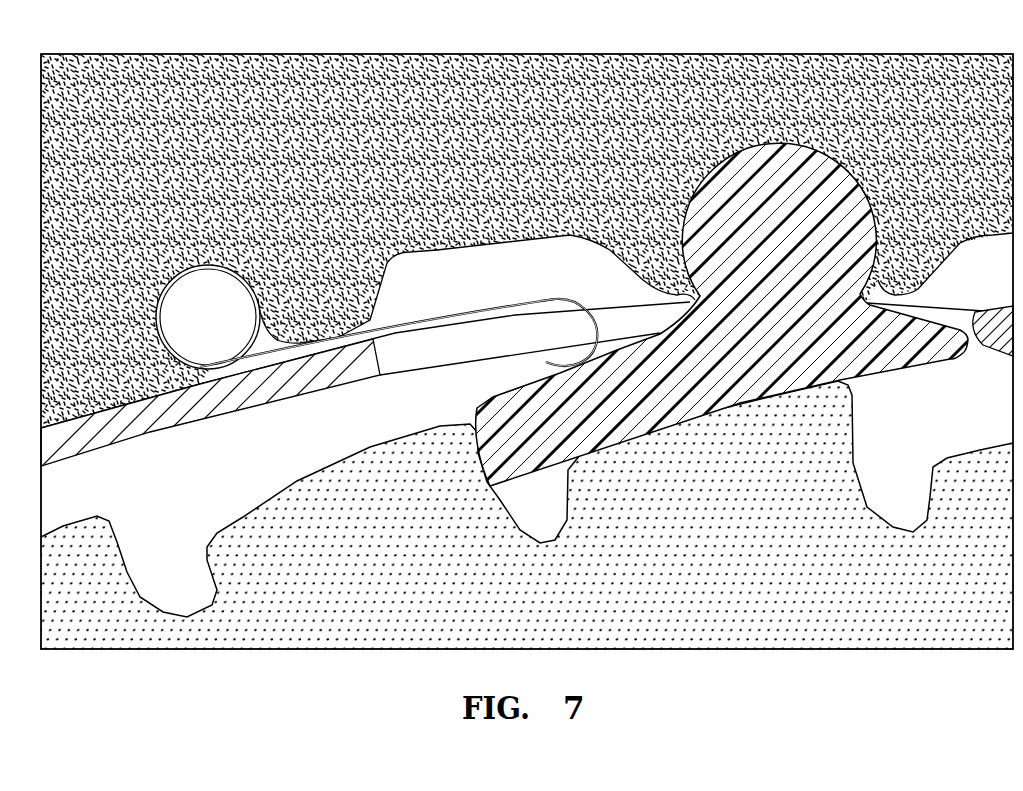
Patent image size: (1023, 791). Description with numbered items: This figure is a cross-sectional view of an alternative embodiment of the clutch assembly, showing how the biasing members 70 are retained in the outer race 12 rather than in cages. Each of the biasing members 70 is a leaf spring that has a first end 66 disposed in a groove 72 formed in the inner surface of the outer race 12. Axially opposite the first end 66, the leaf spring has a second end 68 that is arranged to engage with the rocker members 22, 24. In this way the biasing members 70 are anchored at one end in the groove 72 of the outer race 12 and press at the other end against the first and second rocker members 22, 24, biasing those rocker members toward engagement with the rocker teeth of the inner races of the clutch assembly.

The outer race 12 is at (238, 80).
The first plurality of rocker members 22 is at (678, 305).
The second plurality of rocker members 24 is at (727, 180).
The first end 66 is at (182, 353).
The second end 68 is at (572, 364).
The biasing members 70 is at (433, 316).
The groove 72 is at (208, 280).